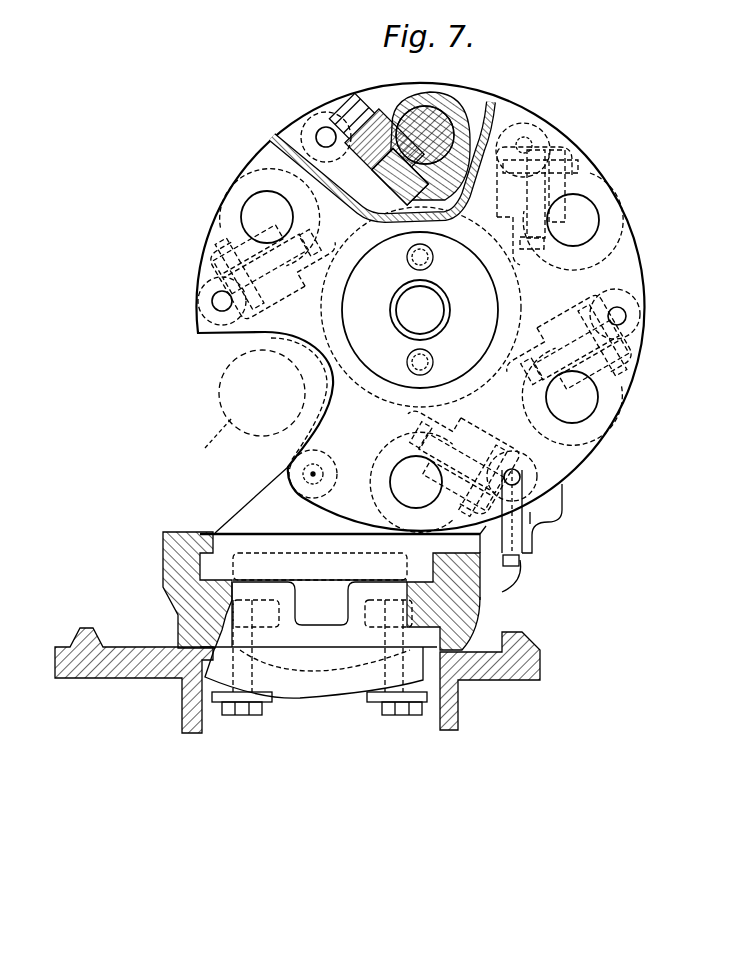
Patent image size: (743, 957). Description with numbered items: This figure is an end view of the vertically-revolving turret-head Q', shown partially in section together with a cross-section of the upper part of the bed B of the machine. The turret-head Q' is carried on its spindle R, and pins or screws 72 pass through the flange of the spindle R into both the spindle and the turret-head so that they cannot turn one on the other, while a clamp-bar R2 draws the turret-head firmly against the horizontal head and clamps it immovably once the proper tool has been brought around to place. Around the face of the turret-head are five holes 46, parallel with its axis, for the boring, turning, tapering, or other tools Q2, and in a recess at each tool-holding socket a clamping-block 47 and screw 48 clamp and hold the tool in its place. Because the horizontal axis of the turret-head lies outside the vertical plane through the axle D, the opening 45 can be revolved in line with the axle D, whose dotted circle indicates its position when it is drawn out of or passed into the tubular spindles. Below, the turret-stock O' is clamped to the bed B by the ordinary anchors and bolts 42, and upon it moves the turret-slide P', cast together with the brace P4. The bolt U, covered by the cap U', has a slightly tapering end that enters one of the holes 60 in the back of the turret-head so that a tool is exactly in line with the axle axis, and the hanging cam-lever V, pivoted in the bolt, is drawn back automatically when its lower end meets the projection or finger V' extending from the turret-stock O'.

The holes 46 is at (463, 72).
The clamping-block 47 is at (372, 107).
The screw 48 is at (348, 104).
The holes 60 is at (327, 130).
The pins or screws 72 is at (431, 309).
The opening 45 is at (262, 390).
The anchors and bolts 42 is at (319, 665).
The tools Q2 is at (413, 120).
The vertically-revolving turret-head Q' is at (420, 307).
The spindle R is at (421, 307).
The clamp-bar R2 is at (420, 310).
The axle D is at (206, 441).
The brace P4 is at (262, 487).
The turret-slide P' is at (320, 566).
The turret-stock O' is at (327, 615).
The bed B is at (135, 700).
The bolt U is at (558, 511).
The cap U' is at (570, 509).
The hanging cam-lever V is at (538, 573).
The projection or finger V' is at (525, 585).